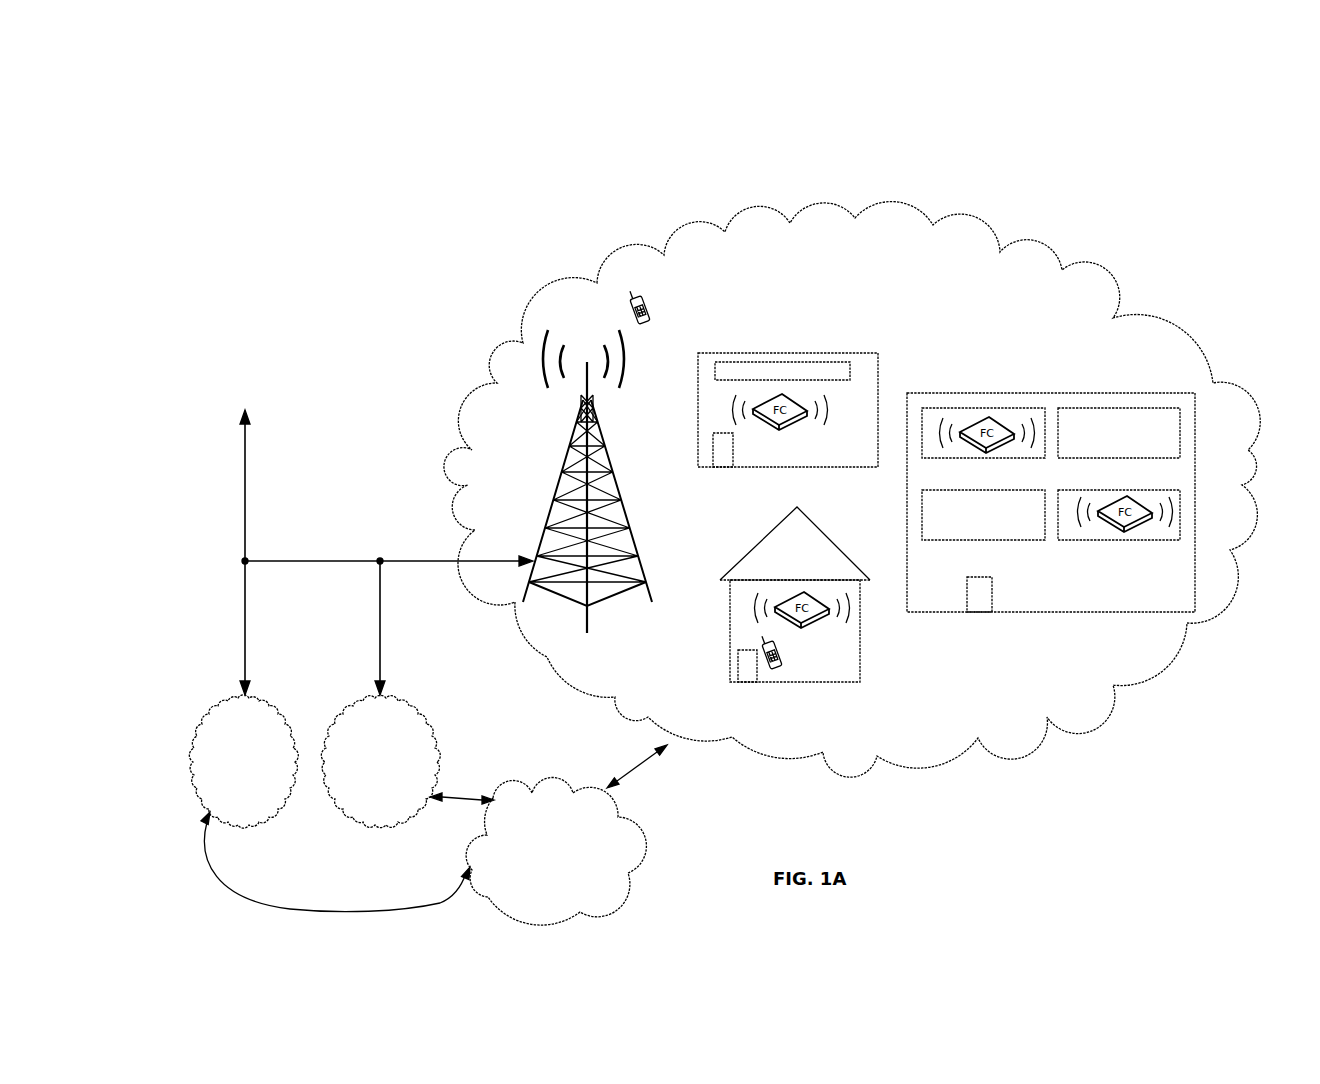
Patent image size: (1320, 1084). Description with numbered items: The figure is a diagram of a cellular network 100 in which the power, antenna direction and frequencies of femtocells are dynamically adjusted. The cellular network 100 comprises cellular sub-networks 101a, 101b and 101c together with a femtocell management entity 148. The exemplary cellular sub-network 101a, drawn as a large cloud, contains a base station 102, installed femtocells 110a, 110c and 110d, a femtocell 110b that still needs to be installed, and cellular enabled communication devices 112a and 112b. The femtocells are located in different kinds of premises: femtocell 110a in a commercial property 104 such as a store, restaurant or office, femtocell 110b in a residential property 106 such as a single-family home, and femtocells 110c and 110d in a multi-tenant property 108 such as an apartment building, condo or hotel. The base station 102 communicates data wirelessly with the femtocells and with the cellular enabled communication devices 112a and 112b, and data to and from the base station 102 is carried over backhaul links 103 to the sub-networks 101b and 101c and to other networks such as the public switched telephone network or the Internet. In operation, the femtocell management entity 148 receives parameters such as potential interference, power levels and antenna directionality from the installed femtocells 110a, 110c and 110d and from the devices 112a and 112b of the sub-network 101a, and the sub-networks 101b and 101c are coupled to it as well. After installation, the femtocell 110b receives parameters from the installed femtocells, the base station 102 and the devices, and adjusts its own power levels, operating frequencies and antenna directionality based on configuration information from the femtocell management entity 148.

The cellular network 100 is at (221, 156).
The cellular sub-network 101a is at (678, 216).
The cellular sub-network 101b is at (245, 827).
The cellular sub-network 101c is at (381, 827).
The base station 102 is at (604, 452).
The backhaul links 103 is at (316, 561).
The commercial properties 104 is at (733, 353).
The residential properties 106 is at (766, 535).
The multi-tenant properties 108 is at (1198, 428).
The femtocell 110a is at (794, 428).
The femtocell 110b is at (804, 628).
The femtocell 110c is at (997, 450).
The femtocell 110d is at (1136, 528).
The cellular enabled communication device 112a is at (646, 300).
The cellular enabled communication device 112b is at (778, 672).
The femtocell management entity 148 is at (563, 777).